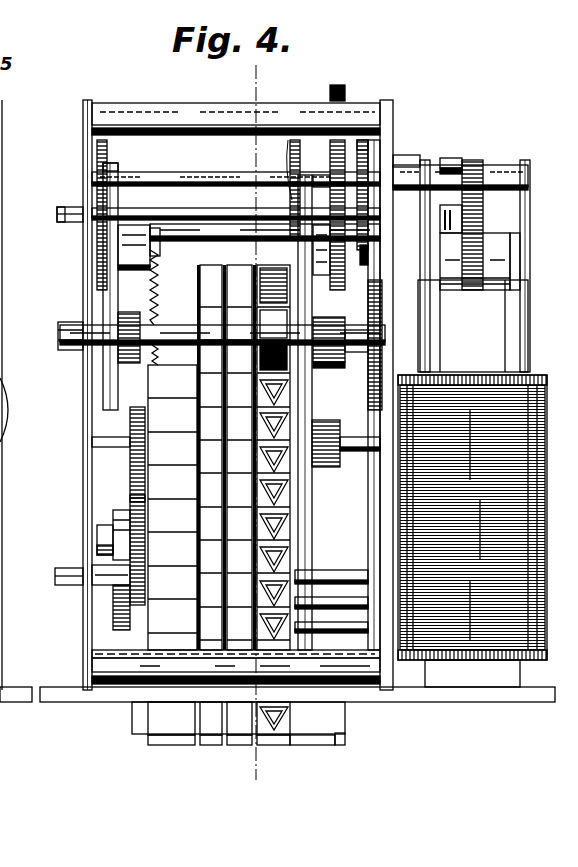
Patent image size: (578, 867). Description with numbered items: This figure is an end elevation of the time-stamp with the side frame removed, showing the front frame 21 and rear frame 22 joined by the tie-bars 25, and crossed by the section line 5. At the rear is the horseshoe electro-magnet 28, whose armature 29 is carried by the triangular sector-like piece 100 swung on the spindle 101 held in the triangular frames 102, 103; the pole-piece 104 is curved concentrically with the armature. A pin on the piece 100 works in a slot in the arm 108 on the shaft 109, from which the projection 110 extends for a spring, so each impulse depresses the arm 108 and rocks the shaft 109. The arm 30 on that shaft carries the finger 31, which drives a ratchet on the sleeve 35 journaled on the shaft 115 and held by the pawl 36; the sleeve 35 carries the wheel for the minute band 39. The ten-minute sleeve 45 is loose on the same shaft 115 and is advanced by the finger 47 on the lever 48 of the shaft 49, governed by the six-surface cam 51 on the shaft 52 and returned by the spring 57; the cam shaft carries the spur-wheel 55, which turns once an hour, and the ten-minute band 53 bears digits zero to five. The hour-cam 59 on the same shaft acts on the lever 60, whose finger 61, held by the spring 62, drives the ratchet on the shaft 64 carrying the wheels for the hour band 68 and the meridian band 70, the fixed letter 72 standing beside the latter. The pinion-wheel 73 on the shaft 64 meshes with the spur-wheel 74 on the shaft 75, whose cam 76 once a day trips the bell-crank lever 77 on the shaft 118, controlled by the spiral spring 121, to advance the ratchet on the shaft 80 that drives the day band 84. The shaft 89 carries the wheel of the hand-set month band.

The section line 5 is at (257, 423).
The front frame 21 is at (88, 152).
The rear frame 22 is at (392, 502).
The tie-bars 25 is at (203, 104).
The horseshoe electro-magnet 28 is at (540, 378).
The armature 29 is at (500, 245).
The arm 30 is at (364, 155).
The finger 31 is at (375, 240).
The sleeve 35 is at (330, 338).
The spring-actuated pawl 36 is at (333, 366).
The band 39 is at (237, 748).
The sleeve 45 is at (148, 342).
The finger 47 is at (110, 292).
The lever or arm 48 is at (120, 250).
The shaft 49 is at (183, 230).
The cam 51 is at (112, 168).
The shaft 52 is at (60, 207).
The ten-minute band 53 is at (210, 747).
The spur-wheel 55 is at (336, 85).
The spring 57 is at (100, 168).
The hour-cam 59 is at (289, 140).
The lever 60 is at (322, 258).
The finger 61 is at (306, 404).
The spring 62 is at (292, 175).
The shaft 64 is at (362, 452).
The band 68 is at (166, 747).
The band 70 is at (277, 748).
The letter M 72 is at (342, 742).
The pinion-wheel 73 is at (130, 425).
The spur-wheel 74 is at (130, 497).
The shaft 75 is at (97, 540).
The cam 76 is at (113, 520).
The bell-crank lever 77 is at (115, 630).
The shaft 80 is at (173, 325).
The band 84 is at (262, 250).
The shaft 89 is at (55, 575).
The triangular sector-like piece 100 is at (475, 261).
The spindle 101 is at (498, 180).
The triangular frame 102 is at (530, 276).
The triangular frame 103 is at (412, 263).
The pole-piece 104 is at (473, 326).
The arm 108 is at (462, 225).
The shaft 109 is at (236, 168).
The projection 110 is at (0, 209).
The shaft 115 is at (58, 345).
The shaft 118 is at (95, 608).
The spiral spring 121 is at (155, 272).